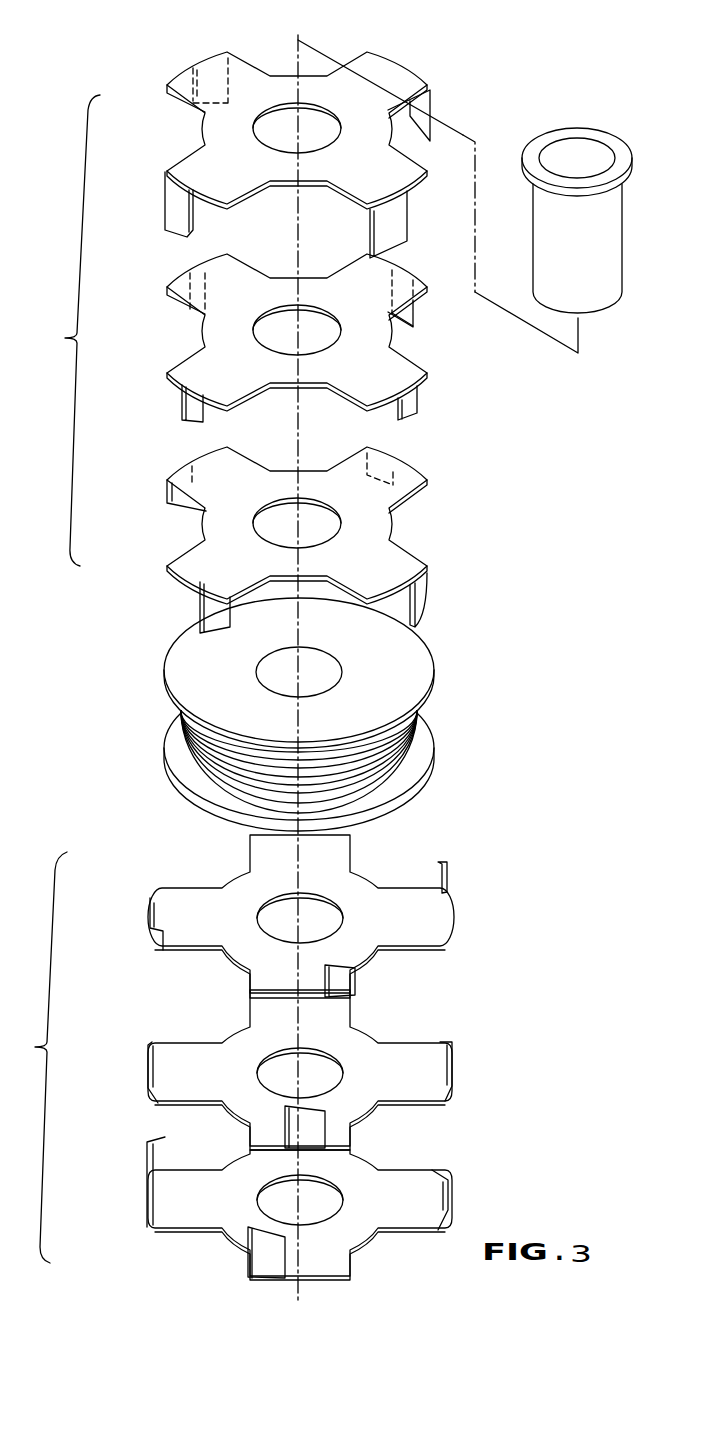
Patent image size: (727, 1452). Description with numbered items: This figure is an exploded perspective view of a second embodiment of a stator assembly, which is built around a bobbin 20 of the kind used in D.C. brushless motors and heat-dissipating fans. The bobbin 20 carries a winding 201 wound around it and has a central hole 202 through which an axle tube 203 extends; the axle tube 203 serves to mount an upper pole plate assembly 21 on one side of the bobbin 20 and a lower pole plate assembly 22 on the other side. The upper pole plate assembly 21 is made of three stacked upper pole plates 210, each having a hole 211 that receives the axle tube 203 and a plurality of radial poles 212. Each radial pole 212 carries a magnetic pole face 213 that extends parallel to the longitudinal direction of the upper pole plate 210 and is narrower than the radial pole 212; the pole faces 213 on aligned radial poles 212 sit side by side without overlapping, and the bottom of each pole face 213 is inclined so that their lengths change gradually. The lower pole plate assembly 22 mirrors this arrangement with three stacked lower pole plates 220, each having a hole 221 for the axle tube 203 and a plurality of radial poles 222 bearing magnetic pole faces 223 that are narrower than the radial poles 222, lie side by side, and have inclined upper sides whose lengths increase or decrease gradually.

The bobbin 20 is at (311, 714).
The winding 201 is at (432, 753).
The central hole 202 is at (330, 672).
The axle tube 203 is at (597, 297).
The upper pole plate assembly 21 is at (65, 330).
The upper pole plate 210 is at (200, 158).
The hole 211 is at (285, 120).
The radial pole 212 is at (395, 58).
The magnetic pole face 213 is at (437, 112).
The lower pole plate assembly 22 is at (37, 1057).
The lower pole plate 220 is at (228, 895).
The hole 221 is at (327, 915).
The radial pole 222 is at (452, 917).
The magnetic pole face 223 is at (447, 872).